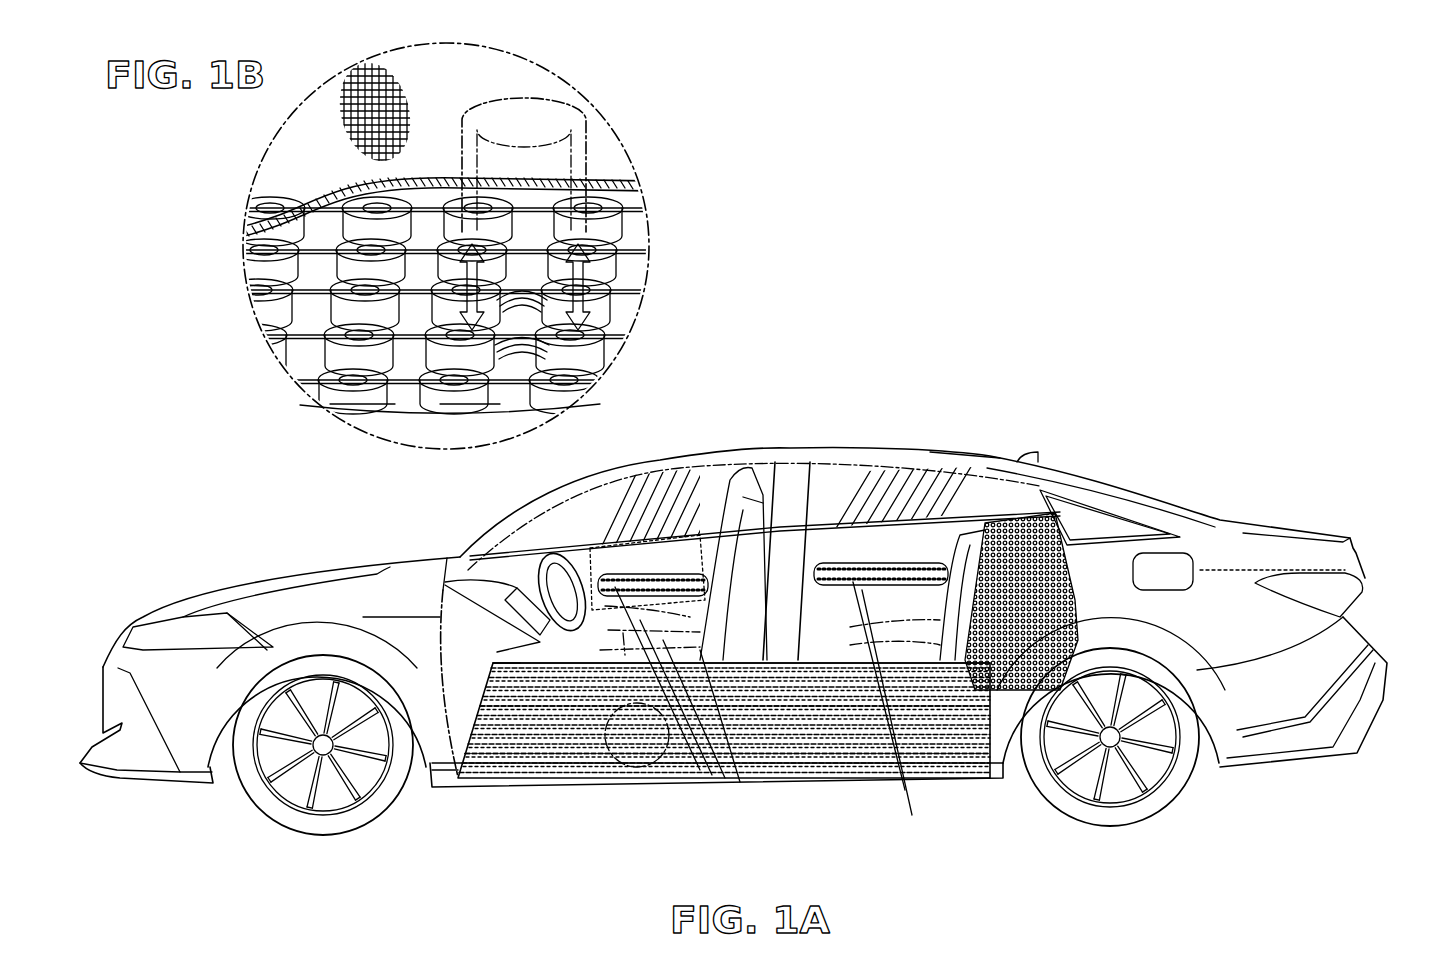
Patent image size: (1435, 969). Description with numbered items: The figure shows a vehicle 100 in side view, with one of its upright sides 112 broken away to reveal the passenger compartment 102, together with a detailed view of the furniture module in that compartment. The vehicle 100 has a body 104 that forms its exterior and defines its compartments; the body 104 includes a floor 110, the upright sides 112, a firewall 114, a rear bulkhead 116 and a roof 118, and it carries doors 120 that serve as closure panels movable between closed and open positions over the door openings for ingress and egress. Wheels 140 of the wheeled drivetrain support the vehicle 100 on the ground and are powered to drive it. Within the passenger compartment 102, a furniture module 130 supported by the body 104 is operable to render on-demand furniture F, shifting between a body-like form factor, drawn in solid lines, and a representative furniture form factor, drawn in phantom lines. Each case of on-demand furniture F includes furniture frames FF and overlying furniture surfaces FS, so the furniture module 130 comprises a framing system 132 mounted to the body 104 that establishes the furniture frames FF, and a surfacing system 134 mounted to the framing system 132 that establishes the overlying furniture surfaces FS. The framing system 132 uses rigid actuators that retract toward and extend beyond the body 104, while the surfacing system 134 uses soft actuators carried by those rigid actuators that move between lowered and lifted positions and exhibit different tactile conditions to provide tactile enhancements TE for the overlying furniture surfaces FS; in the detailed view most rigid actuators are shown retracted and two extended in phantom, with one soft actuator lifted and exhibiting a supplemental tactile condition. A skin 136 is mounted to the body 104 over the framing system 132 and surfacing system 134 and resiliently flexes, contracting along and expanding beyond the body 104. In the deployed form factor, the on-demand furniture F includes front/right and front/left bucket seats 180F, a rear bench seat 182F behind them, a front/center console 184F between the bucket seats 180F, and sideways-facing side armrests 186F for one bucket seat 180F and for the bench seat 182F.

In FIG. 1B, the vehicle 100 is at (455, 66).
In FIG. 1A, the vehicle 100 is at (805, 435).
In FIG. 1B, the passenger compartment 102 is at (487, 83).
In FIG. 1A, the passenger compartment 102 is at (758, 595).
In FIG. 1B, the body 104 is at (381, 418).
In FIG. 1A, the body 104 is at (787, 561).
In FIG. 1B, the floor 110 is at (470, 418).
In FIG. 1A, the floor 110 is at (724, 720).
In FIG. 1A, the upright sides 112 is at (647, 572).
In FIG. 1A, the firewall 114 is at (717, 729).
In FIG. 1A, the rear bulkhead 116 is at (1022, 602).
In FIG. 1A, the roof 118 is at (965, 454).
In FIG. 1A, the doors 120 is at (782, 562).
In FIG. 1B, the furniture module 130 is at (290, 378).
In FIG. 1A, the furniture module 130 is at (520, 686).
In FIG. 1B, the framing system 132 is at (595, 290).
In FIG. 1A, the framing system 132 is at (523, 690).
In FIG. 1B, the surfacing system 134 is at (573, 192).
In FIG. 1A, the surfacing system 134 is at (526, 694).
In FIG. 1B, the skin 136 is at (296, 166).
In FIG. 1A, the wheels 140 is at (264, 816).
In FIG. 1A, the bucket seats 180F is at (700, 770).
In FIG. 1A, the bench seat 182F is at (905, 790).
In FIG. 1A, the console 184F is at (712, 775).
In FIG. 1A, the armrests 186F is at (740, 782).
In FIG. 1A, the on-demand furniture F is at (598, 608).
In FIG. 1A, the overlying furniture surfaces FS is at (577, 727).
In FIG. 1A, the tactile enhancements TE is at (563, 650).
In FIG. 1A, the furniture frames FF is at (555, 745).